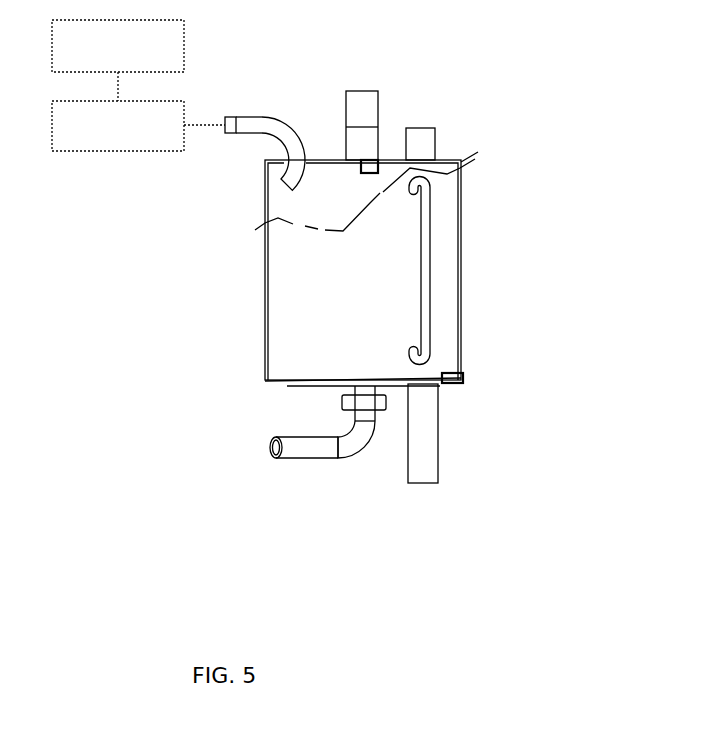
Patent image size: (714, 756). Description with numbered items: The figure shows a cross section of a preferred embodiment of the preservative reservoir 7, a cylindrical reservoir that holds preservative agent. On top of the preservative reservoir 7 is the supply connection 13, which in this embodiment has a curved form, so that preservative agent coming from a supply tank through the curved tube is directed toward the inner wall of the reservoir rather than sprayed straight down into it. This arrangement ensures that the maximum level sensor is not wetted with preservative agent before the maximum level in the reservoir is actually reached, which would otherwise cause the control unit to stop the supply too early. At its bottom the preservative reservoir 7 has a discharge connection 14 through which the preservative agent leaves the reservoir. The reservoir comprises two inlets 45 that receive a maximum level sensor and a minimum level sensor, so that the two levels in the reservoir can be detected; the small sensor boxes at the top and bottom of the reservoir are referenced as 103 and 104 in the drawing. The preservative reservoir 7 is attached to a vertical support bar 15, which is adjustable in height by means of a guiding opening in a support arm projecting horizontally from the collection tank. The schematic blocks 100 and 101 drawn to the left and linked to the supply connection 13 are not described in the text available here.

The control unit 100 is at (118, 60).
The pump unit 101 is at (138, 126).
The supply connection 13 is at (250, 125).
The inlets 45 is at (355, 160).
The upper level sensor 103 is at (370, 168).
The preservative reservoir 7 is at (448, 278).
The lower level sensor 104 is at (455, 378).
The vertical support bar 15 is at (430, 427).
The discharge connection 14 is at (303, 443).